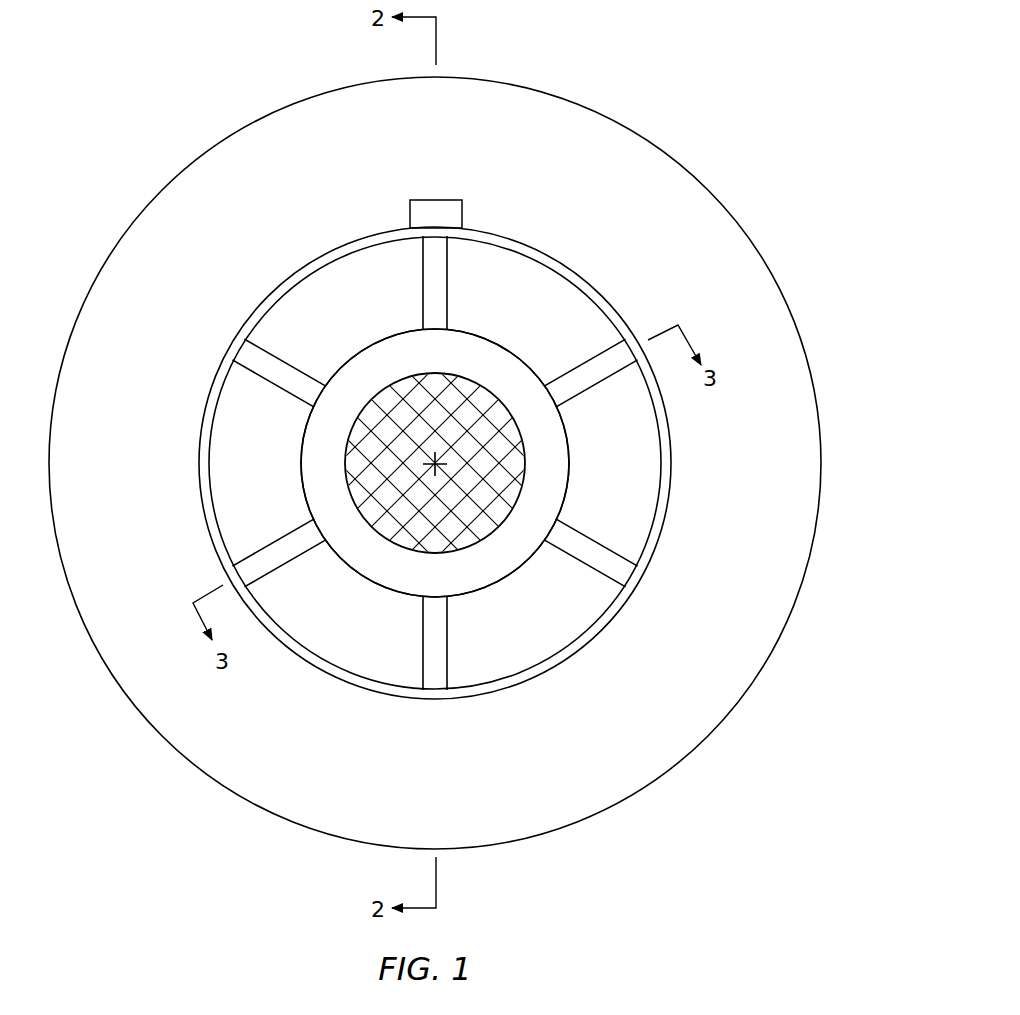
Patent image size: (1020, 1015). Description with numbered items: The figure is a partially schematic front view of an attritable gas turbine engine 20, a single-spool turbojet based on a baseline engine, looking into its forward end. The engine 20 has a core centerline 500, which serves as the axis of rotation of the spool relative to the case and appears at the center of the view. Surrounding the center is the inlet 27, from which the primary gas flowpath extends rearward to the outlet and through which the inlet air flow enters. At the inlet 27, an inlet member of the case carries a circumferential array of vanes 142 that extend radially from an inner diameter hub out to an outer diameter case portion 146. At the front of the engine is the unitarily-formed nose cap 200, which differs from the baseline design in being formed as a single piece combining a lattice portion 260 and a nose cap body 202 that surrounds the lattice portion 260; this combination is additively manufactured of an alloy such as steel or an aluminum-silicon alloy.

The gas turbine engine 20 is at (691, 131).
The outer diameter case portion 146 is at (642, 578).
The vanes 142 is at (446, 647).
The nose cap 200 is at (546, 349).
The nose cap body 202 is at (485, 362).
The lattice portion 260 is at (391, 410).
The core centerline 500 is at (437, 465).
The inlet 27 is at (350, 651).